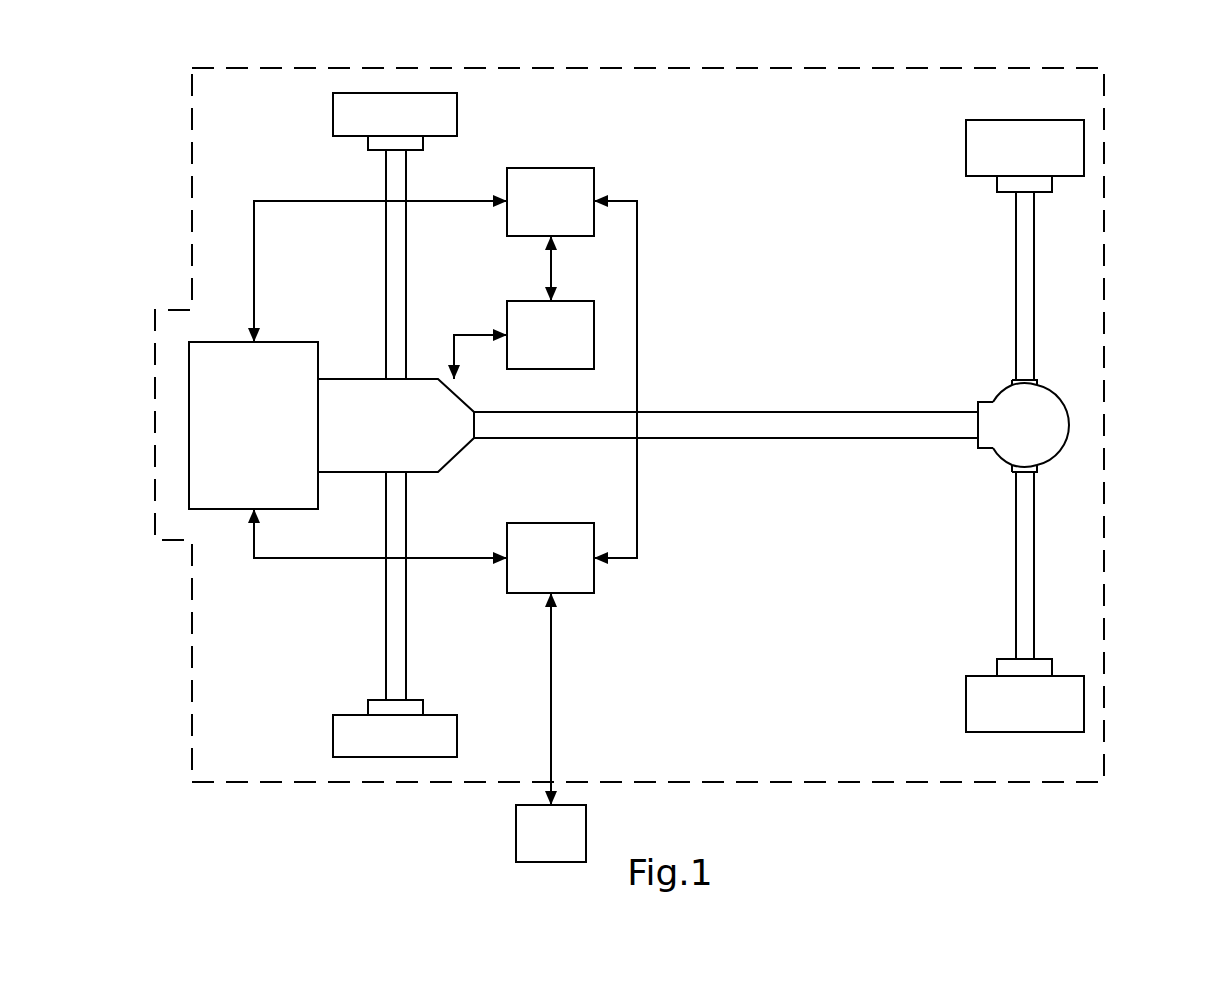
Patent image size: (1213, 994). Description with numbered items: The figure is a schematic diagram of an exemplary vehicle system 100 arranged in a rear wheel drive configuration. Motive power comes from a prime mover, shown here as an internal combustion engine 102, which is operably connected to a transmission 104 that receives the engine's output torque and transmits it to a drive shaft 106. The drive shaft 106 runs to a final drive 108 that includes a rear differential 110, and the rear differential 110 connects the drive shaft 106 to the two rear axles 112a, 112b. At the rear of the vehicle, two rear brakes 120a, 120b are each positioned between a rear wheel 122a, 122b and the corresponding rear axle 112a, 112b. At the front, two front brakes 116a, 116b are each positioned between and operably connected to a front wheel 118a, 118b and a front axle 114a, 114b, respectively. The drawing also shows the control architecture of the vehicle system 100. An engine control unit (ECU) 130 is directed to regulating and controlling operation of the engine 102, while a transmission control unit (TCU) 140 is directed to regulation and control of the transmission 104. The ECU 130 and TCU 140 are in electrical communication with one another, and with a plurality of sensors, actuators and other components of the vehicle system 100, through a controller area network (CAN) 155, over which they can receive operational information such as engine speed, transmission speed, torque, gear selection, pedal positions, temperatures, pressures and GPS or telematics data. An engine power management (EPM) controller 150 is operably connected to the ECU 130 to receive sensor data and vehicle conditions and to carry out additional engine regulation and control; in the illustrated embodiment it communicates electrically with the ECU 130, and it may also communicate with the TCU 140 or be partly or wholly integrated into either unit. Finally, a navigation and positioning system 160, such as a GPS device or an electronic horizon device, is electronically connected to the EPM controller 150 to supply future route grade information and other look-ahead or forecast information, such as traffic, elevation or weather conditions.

The vehicle system 100 is at (1124, 88).
The internal combustion engine 102 is at (253, 425).
The transmission 104 is at (396, 425).
The drive shaft 106 is at (735, 412).
The final drive 108 is at (1044, 426).
The rear differential 110 is at (993, 456).
The rear axle 112a is at (1016, 290).
The rear axle 112b is at (1016, 606).
The front axle 114a is at (386, 240).
The front axle 114b is at (386, 630).
The front brake 116a is at (368, 143).
The front brake 116b is at (368, 694).
The front wheel 118a is at (333, 105).
The front wheel 118b is at (333, 723).
The rear brake 120a is at (997, 186).
The rear brake 120b is at (997, 654).
The rear wheel 122a is at (966, 145).
The rear wheel 122b is at (966, 697).
The engine control unit (ECU) 130 is at (585, 168).
The transmission control unit (TCU) 140 is at (585, 301).
The engine power management (EPM) controller 150 is at (585, 523).
The controller area network (CAN) 155 is at (678, 216).
The navigation and positioning system 160 is at (516, 822).